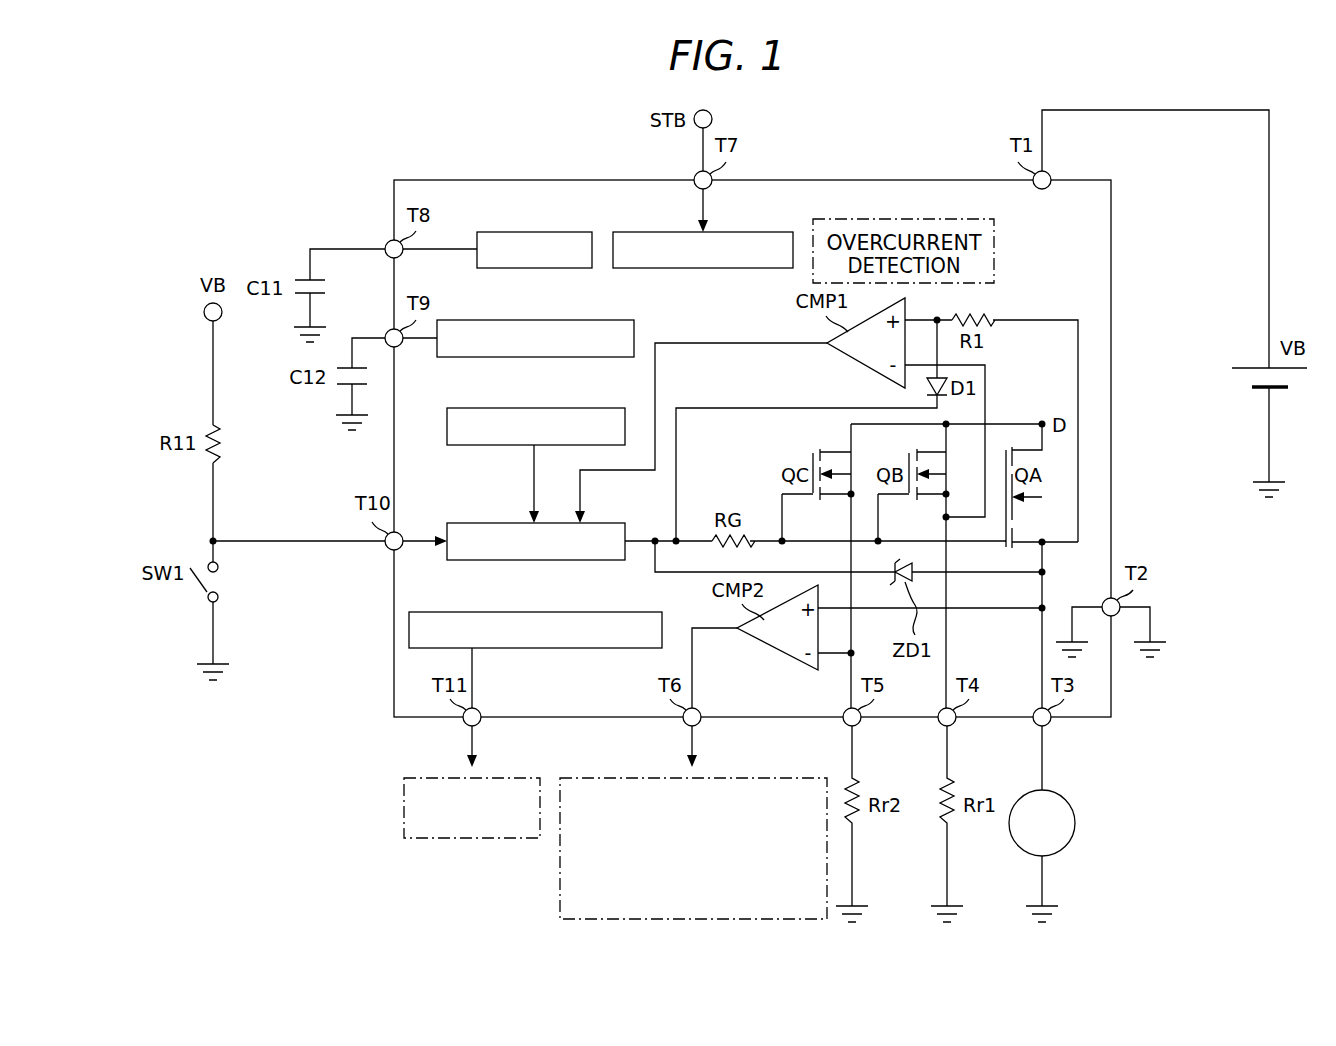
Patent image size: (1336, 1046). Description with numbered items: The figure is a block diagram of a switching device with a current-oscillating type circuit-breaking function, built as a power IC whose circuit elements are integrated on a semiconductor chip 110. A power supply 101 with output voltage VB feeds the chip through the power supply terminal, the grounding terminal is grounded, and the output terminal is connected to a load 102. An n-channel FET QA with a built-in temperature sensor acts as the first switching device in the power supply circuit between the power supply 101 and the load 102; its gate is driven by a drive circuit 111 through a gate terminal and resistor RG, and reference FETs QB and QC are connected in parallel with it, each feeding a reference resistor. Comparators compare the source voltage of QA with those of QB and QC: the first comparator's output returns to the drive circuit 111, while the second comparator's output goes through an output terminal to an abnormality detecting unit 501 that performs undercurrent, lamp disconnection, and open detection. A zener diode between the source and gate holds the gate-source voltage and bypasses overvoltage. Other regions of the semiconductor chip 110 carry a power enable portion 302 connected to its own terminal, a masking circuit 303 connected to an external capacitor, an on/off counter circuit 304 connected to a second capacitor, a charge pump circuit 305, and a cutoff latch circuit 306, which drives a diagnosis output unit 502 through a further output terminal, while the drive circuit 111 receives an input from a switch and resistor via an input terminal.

The semiconductor chip 110 is at (912, 180).
The drive circuit 111 is at (462, 523).
The power enable portion 302 is at (742, 232).
The masking circuit 303 is at (527, 232).
The on/off counter circuit 304 is at (527, 320).
The charge pump circuit 305 is at (527, 408).
The cutoff latch circuit 306 is at (527, 612).
The abnormality detecting unit 501 is at (726, 778).
The diagnosis output unit 502 is at (506, 778).
The power supply 101 is at (1250, 367).
The load 102 is at (1076, 823).